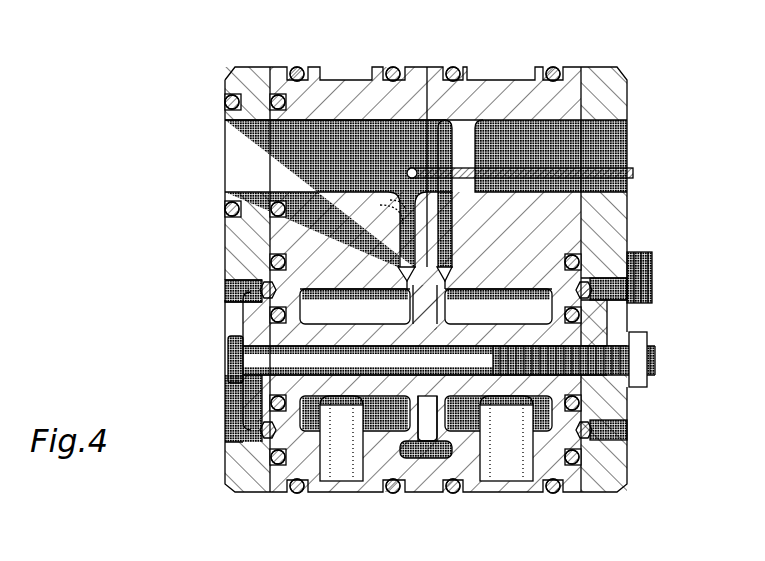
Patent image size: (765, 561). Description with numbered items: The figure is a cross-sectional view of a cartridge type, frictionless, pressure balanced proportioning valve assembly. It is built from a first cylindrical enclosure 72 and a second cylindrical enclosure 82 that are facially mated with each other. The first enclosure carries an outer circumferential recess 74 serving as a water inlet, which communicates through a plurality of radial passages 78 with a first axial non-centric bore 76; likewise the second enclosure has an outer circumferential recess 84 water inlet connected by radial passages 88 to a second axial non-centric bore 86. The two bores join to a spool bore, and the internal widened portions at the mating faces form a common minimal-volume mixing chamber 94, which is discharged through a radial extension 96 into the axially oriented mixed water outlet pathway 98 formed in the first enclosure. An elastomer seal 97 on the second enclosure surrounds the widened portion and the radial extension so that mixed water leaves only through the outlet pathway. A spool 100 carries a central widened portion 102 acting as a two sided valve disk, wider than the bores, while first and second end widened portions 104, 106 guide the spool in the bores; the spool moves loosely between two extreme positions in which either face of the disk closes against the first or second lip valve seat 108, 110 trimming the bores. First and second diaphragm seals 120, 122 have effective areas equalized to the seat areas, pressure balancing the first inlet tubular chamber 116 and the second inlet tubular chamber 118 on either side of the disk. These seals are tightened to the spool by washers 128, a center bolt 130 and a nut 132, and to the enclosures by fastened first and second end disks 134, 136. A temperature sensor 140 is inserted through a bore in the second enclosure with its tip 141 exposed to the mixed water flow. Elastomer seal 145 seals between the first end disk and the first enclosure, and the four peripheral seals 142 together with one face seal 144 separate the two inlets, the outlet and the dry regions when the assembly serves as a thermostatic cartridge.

The first cylindrical enclosure 72 is at (277, 93).
The outer circumferential recess water inlet 74 is at (355, 80).
The first axial non-centric bore 76 is at (340, 292).
The radial passages 78 is at (365, 440).
The second cylindrical enclosure 82 is at (579, 68).
The outer circumferential recess water inlet 84 is at (497, 80).
The second axial non-centric bore 86 is at (508, 290).
The radial passages 88 is at (512, 410).
The mixing chamber 94 is at (415, 445).
The radial extension 96 is at (500, 243).
The elastomer seal 97 is at (440, 100).
The mixed water outlet pathway 98 is at (300, 158).
The spool 100 is at (265, 403).
The central widened portion 102 is at (400, 272).
The first end widened portion 104 is at (266, 288).
The second end widened portion 106 is at (600, 450).
The first lip valve seat 108 is at (333, 410).
The second lip valve seat 110 is at (520, 407).
The first inlet tubular chamber 116 is at (366, 316).
The second inlet tubular chamber 118 is at (514, 316).
The first diaphragm seal 120 is at (265, 460).
The second diaphragm seal 122 is at (592, 420).
The washers 128 is at (240, 292).
The center bolt 130 is at (237, 355).
The nut 132 is at (636, 337).
The first end disk 134 is at (231, 86).
The second end disk 136 is at (612, 85).
The temperature sensor 140 is at (635, 172).
The tip 141 is at (412, 168).
The peripheral elastomer seals 142 is at (552, 70).
The face elastomer seal 144 is at (233, 104).
The elastomer seal 145 is at (255, 92).